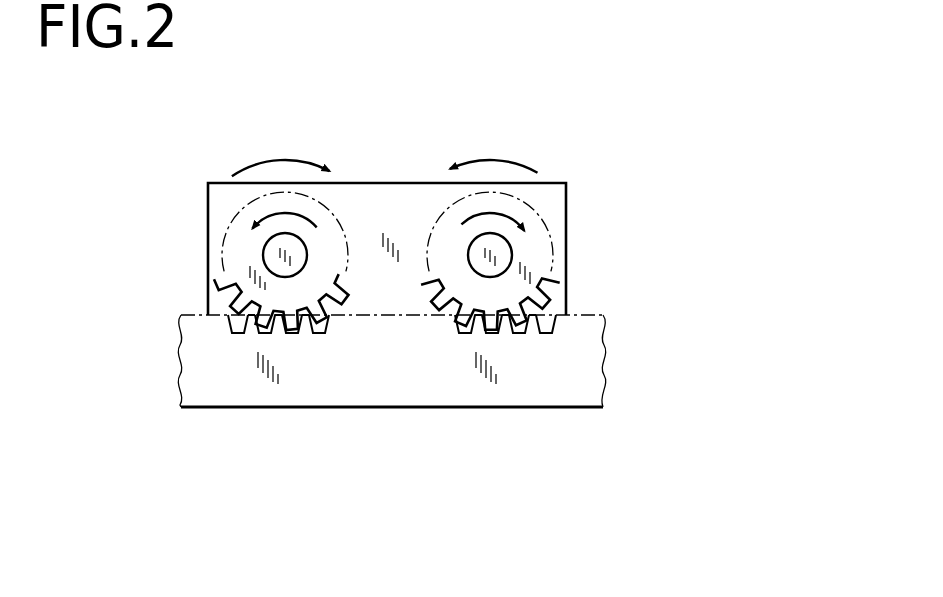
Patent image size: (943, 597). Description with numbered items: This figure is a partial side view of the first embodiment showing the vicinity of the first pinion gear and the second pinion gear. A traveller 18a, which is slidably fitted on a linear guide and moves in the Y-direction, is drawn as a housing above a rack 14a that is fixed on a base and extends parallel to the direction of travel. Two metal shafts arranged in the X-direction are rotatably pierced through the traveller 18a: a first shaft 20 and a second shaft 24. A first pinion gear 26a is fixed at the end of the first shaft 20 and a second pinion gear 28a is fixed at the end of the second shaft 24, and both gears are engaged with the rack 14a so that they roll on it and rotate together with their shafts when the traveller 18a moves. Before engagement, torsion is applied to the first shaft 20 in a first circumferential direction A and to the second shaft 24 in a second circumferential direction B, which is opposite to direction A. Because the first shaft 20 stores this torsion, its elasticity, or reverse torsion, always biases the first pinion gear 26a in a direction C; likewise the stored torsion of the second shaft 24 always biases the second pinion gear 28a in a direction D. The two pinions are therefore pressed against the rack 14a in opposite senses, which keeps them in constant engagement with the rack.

The traveller 18a is at (566, 183).
The rack 14a is at (585, 365).
The second pinion gear 28a is at (240, 252).
The first pinion gear 26a is at (537, 247).
The second shaft 24 is at (282, 270).
The first shaft 20 is at (508, 270).
The first circumferential direction A is at (470, 225).
The second circumferential direction B is at (313, 226).
The biasing direction of first pinion gear C is at (512, 165).
The biasing direction of second pinion gear D is at (280, 166).